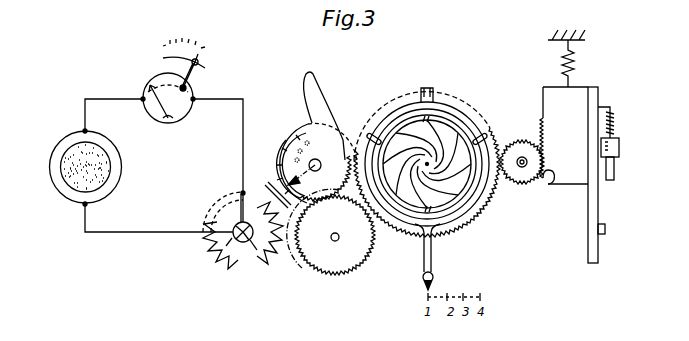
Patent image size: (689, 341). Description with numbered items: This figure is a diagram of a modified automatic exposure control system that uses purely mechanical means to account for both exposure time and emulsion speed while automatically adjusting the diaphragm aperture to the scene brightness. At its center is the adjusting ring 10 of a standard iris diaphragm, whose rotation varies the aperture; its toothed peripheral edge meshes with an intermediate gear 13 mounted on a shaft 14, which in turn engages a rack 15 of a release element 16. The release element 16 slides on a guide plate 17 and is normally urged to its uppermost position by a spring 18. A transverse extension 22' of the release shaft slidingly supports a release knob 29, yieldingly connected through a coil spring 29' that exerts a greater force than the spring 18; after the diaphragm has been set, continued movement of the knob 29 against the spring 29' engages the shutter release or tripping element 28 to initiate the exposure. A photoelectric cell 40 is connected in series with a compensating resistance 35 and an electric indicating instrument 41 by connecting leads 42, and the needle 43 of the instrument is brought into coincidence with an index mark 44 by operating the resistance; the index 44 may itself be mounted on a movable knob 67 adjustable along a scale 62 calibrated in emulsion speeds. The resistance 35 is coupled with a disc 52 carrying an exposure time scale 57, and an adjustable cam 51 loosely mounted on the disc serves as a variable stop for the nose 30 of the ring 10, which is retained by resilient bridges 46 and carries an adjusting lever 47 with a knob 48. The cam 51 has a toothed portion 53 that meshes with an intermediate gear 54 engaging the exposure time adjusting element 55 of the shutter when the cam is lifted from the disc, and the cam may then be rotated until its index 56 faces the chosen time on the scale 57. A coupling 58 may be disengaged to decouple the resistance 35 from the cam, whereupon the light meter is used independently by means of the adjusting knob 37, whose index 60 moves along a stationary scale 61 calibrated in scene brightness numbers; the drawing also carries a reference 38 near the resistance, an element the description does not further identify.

The adjusting ring 10 is at (462, 108).
The intermediate gear 13 is at (522, 140).
The shaft 14 is at (522, 170).
The rack 15 is at (547, 188).
The release element 16 is at (574, 184).
The guide plate 17 is at (598, 207).
The spring 18 is at (575, 61).
The transverse extension 22' is at (627, 168).
The shutter release or tripping element 28 is at (606, 229).
The release knob 29 is at (628, 142).
The coil spring 29' is at (623, 121).
The stop or nose 30 is at (433, 88).
The compensating resistance 35 is at (276, 250).
The adjusting knob 37 is at (226, 246).
The electromagnet 38 is at (230, 205).
The photoelectric cell 40 is at (62, 160).
The electric indicating instrument 41 is at (154, 78).
The connecting leads 42 is at (85, 118).
The indicating pointer or needle 43 is at (162, 110).
The index or adjusting mark 44 is at (186, 88).
The resilient retaining brackets or bridges 46 is at (375, 133).
The adjusting lever 47 is at (433, 242).
The adjusting knob 48 is at (433, 276).
The adjustable cam 51 is at (318, 78).
The disc 52 is at (307, 129).
The toothed portion 53 is at (308, 203).
The intermediate gear 54 is at (337, 276).
The exposure time adjusting element 55 is at (403, 230).
The index 56 is at (283, 160).
The scale 57 is at (291, 130).
The coupling 58 is at (266, 188).
The index 60 is at (242, 252).
The stationary scale 61 is at (257, 252).
The scale 62 is at (196, 40).
The movable knob 67 is at (198, 62).